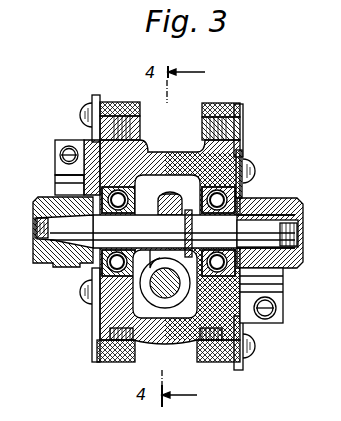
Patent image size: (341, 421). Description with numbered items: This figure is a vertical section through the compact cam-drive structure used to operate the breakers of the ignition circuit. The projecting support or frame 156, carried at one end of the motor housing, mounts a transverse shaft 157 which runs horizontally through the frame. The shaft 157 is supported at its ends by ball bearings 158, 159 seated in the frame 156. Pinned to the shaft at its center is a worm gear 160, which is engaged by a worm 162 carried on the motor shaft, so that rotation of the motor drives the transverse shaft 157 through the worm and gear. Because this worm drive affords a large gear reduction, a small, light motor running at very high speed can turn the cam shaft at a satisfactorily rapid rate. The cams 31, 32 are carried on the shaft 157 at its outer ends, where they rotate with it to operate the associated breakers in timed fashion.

The cam 31 is at (47, 257).
The cam 32 is at (283, 205).
The support or frame 156 is at (97, 303).
The transverse shaft 157 is at (247, 208).
The ball bearing 158 is at (86, 191).
The ball bearing 159 is at (245, 279).
The worm gear 160 is at (173, 192).
The worm 162 is at (171, 306).